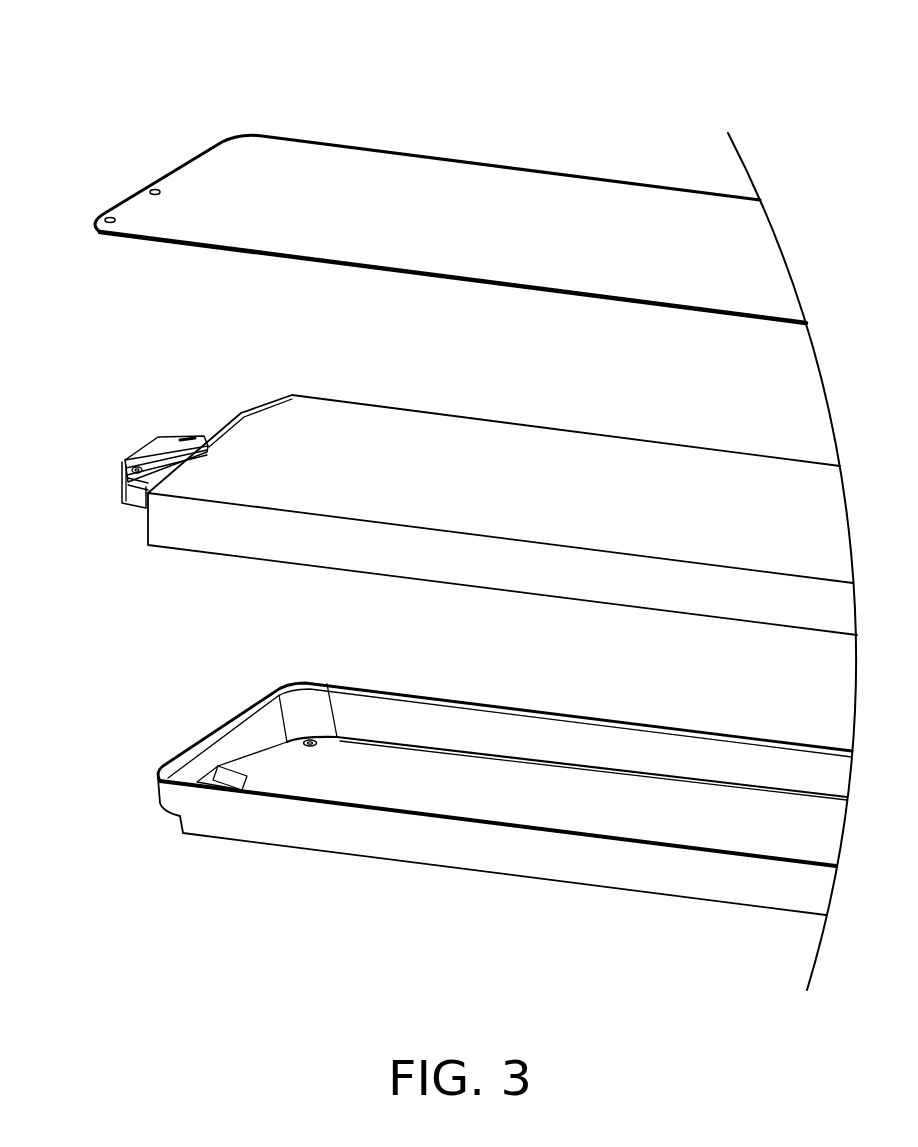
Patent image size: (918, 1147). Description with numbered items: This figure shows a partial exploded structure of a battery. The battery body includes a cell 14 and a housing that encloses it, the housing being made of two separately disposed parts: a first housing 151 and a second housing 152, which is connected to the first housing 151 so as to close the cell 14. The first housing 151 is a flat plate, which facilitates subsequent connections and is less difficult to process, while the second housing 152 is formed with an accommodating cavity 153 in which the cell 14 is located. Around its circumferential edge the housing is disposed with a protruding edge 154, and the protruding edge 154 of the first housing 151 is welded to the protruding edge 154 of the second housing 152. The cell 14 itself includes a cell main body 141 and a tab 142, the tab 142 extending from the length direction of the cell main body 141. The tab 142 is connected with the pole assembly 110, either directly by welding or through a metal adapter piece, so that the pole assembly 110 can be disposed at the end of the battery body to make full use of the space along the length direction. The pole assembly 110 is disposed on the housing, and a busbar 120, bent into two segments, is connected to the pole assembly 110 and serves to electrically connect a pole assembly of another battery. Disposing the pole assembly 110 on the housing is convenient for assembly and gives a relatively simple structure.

The cell 14 is at (133, 592).
The pole assembly 110 is at (183, 437).
The busbar 120 is at (142, 445).
The cell main body 141 is at (358, 443).
The tab 142 is at (242, 412).
The first housing 151 is at (382, 193).
The second housing 152 is at (280, 817).
The accommodating cavity 153 is at (392, 787).
The protruding edge 154 is at (267, 135).